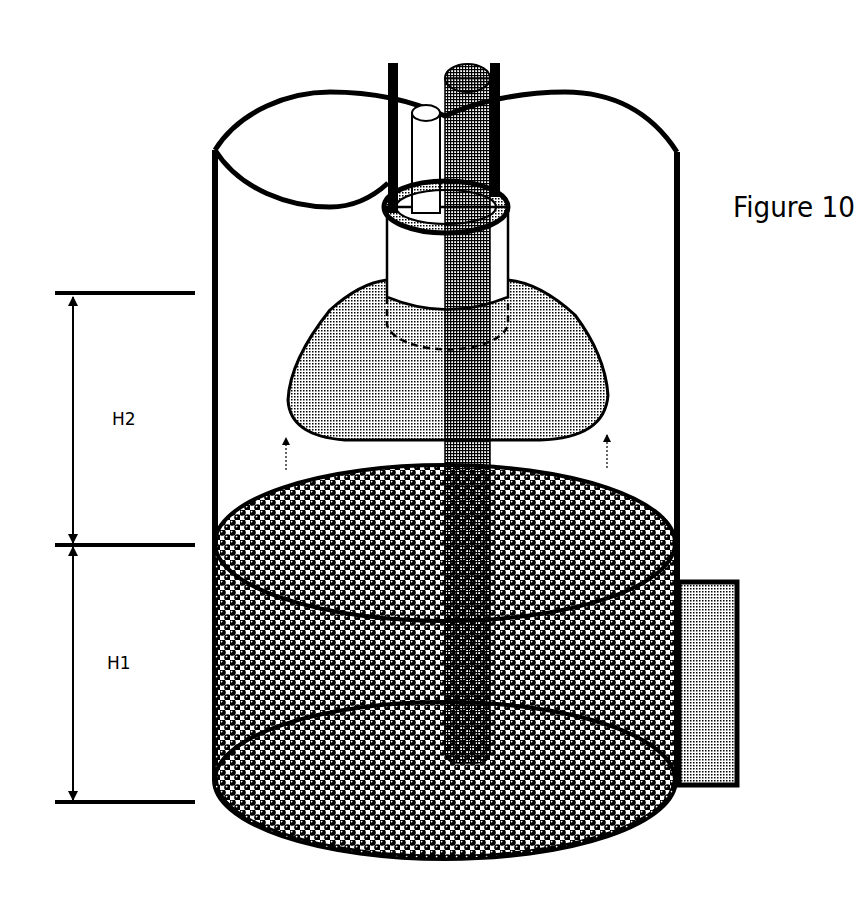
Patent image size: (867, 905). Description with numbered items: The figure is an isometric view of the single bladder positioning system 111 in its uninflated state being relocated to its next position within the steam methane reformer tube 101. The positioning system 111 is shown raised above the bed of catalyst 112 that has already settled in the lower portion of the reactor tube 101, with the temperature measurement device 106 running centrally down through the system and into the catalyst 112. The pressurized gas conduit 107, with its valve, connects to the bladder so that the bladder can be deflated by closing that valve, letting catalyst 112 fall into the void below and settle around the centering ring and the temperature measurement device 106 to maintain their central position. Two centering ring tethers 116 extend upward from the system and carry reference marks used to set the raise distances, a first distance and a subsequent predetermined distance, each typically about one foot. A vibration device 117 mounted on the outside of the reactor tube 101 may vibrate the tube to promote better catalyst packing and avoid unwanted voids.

The steam methane reformer tube 101 is at (689, 395).
The temperature measurement device 106 is at (465, 402).
The pressurized gas conduit 107 is at (425, 194).
The single bladder positioning system 111 is at (358, 405).
The catalyst 112 is at (621, 517).
The centering ring tether 116 is at (455, 127).
The vibration device 117 is at (728, 683).